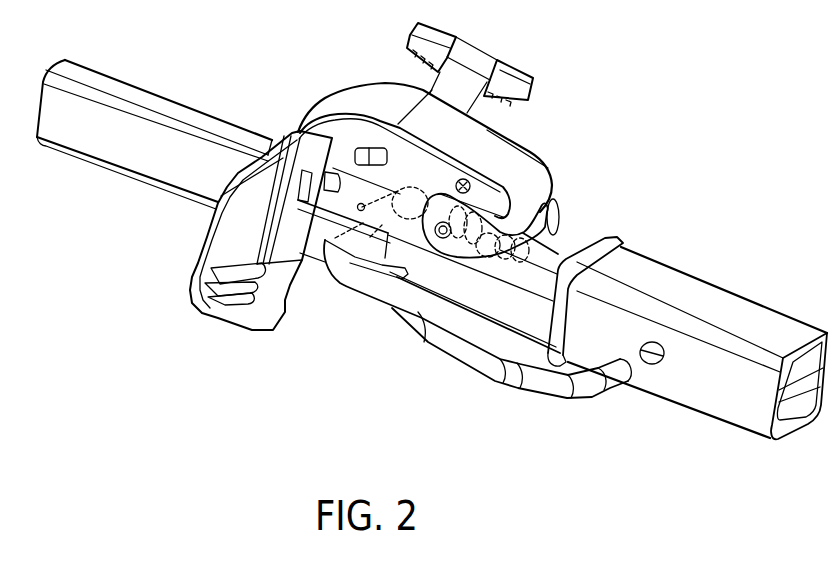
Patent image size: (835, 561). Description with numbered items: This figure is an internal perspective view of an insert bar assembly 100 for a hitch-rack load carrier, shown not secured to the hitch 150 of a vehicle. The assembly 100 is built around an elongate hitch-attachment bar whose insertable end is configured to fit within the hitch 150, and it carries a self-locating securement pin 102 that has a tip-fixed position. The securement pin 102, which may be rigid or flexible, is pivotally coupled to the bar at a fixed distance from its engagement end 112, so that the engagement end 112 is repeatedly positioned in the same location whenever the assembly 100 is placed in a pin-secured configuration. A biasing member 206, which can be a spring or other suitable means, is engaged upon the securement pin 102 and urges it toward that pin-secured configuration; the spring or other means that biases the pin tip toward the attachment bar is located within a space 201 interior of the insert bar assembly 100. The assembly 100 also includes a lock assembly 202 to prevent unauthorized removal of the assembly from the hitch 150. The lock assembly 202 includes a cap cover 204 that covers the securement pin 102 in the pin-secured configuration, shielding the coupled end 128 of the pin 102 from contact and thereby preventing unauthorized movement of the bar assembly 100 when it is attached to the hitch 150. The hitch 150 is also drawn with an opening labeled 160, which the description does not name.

The insert bar assembly 100 is at (676, 80).
The securement pin 102 is at (484, 374).
The engagement end 112 is at (613, 380).
The coupled end 128 is at (328, 277).
The hitch 150 is at (722, 302).
The pin hole 160 is at (652, 342).
The space 201 is at (440, 156).
The lock assembly 202 is at (290, 138).
The cap cover 204 is at (203, 316).
The biasing member 206 is at (515, 207).